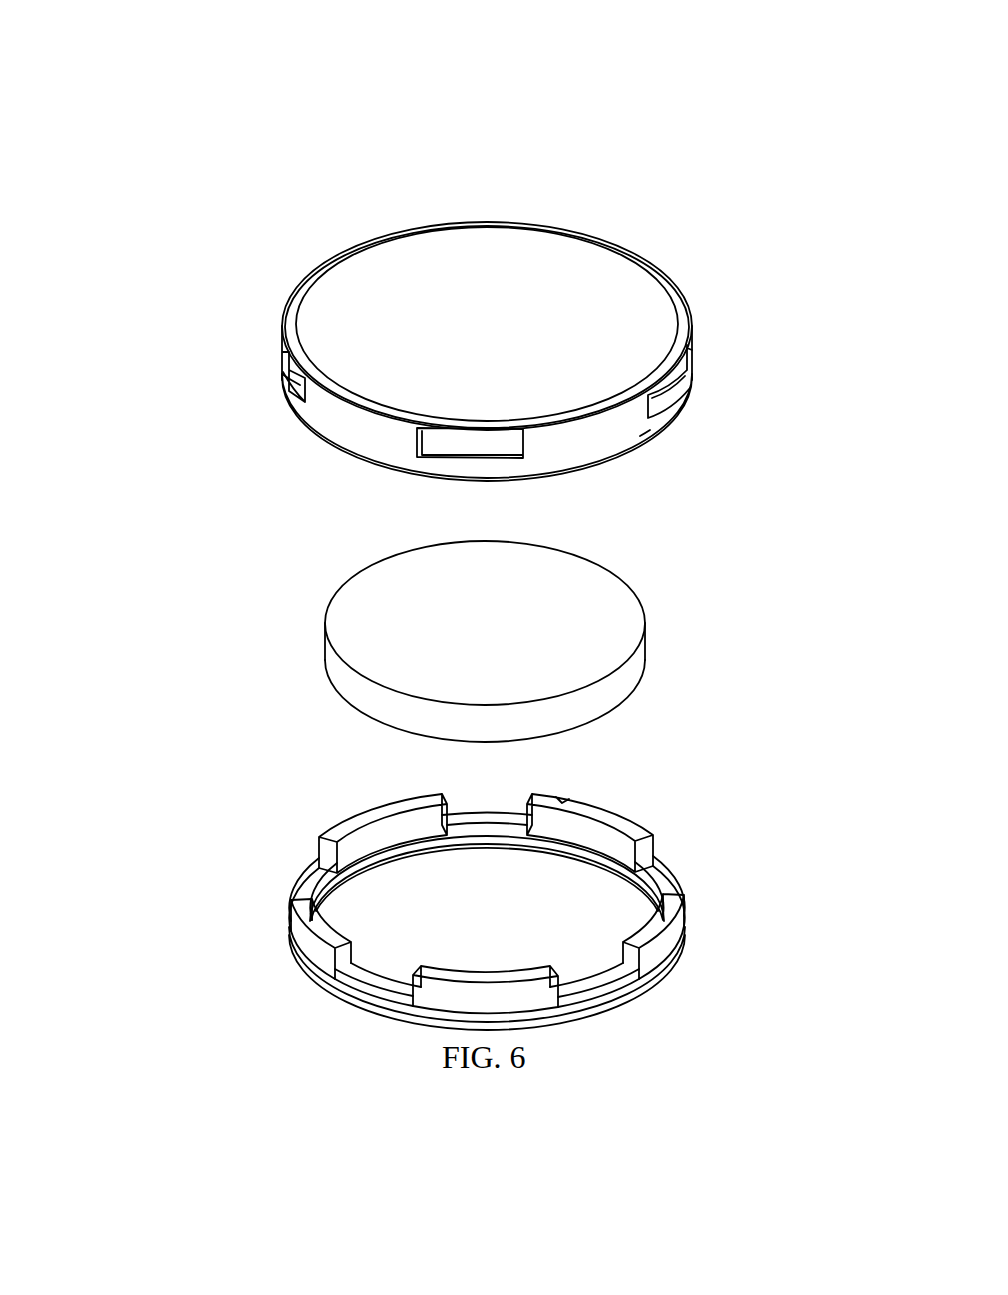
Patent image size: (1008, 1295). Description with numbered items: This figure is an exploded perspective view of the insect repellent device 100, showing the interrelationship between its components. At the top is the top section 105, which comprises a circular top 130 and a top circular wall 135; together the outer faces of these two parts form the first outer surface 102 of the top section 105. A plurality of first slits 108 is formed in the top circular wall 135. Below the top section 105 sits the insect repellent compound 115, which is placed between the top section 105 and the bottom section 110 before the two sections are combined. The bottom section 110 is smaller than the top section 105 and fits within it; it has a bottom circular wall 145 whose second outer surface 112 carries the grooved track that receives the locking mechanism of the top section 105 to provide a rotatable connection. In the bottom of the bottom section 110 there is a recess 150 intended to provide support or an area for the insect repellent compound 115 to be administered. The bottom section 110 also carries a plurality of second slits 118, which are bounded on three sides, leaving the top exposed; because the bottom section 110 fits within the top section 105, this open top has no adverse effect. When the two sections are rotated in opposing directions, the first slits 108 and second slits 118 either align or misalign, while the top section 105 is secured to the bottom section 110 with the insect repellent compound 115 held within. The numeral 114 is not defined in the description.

The insect repellent device 100 is at (643, 39).
The top section 105 is at (596, 242).
The circular top 130 is at (433, 263).
The first slits 108 is at (297, 382).
The first outer surface 102 is at (352, 427).
The top circular wall 135 is at (597, 440).
The insect repellent compound 115 is at (325, 635).
The bottom section 110 is at (667, 948).
The tab 114 is at (595, 831).
The second slits 118 is at (322, 867).
The bottom circular wall 145 is at (310, 952).
The second outer surface 112 is at (438, 1005).
The recess 150 is at (553, 932).